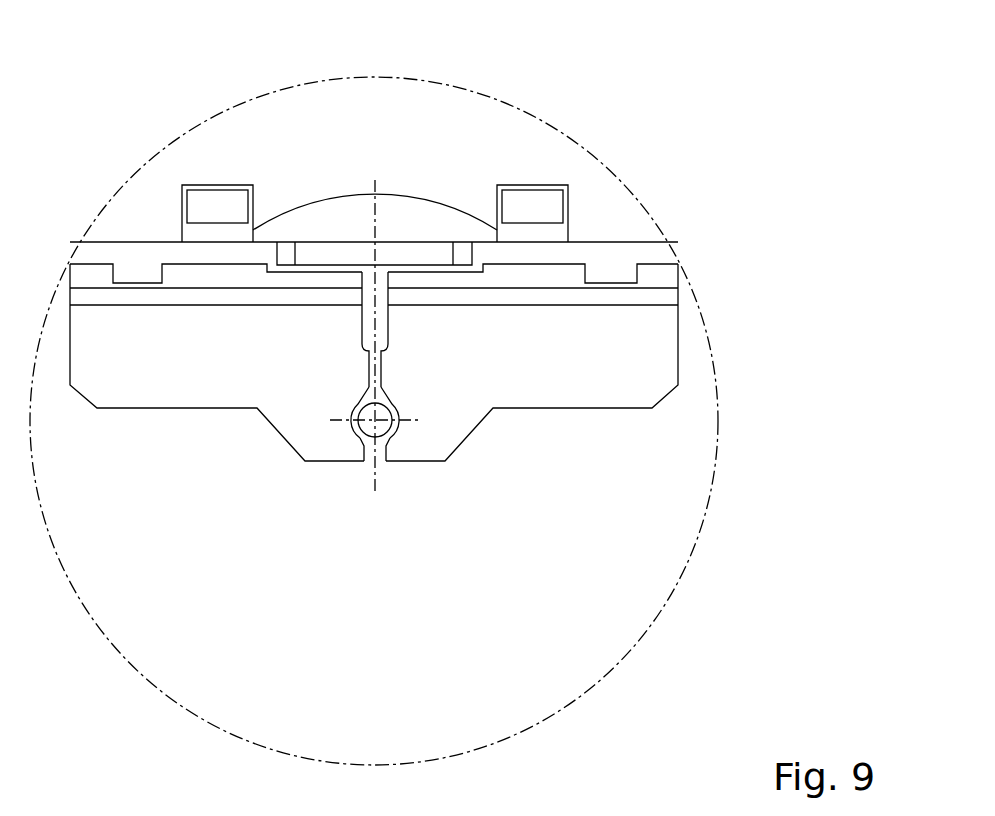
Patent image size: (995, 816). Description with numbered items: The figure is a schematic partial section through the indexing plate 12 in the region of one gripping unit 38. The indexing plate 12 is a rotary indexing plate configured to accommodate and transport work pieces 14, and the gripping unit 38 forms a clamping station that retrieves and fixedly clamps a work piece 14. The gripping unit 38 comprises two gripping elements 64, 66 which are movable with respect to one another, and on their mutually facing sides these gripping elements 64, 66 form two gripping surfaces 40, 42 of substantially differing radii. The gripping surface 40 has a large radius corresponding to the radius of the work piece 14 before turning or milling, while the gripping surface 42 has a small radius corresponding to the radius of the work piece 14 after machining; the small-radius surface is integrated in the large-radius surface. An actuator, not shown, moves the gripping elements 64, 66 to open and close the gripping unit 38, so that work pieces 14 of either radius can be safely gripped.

The indexing plate 12 is at (482, 147).
The work piece 14 is at (363, 410).
The gripping unit 38 is at (695, 248).
The gripping surface with a large radius 40 is at (367, 462).
The gripping surface with a small radius 42 is at (355, 422).
The gripping element 64 is at (177, 367).
The gripping element 66 is at (628, 350).